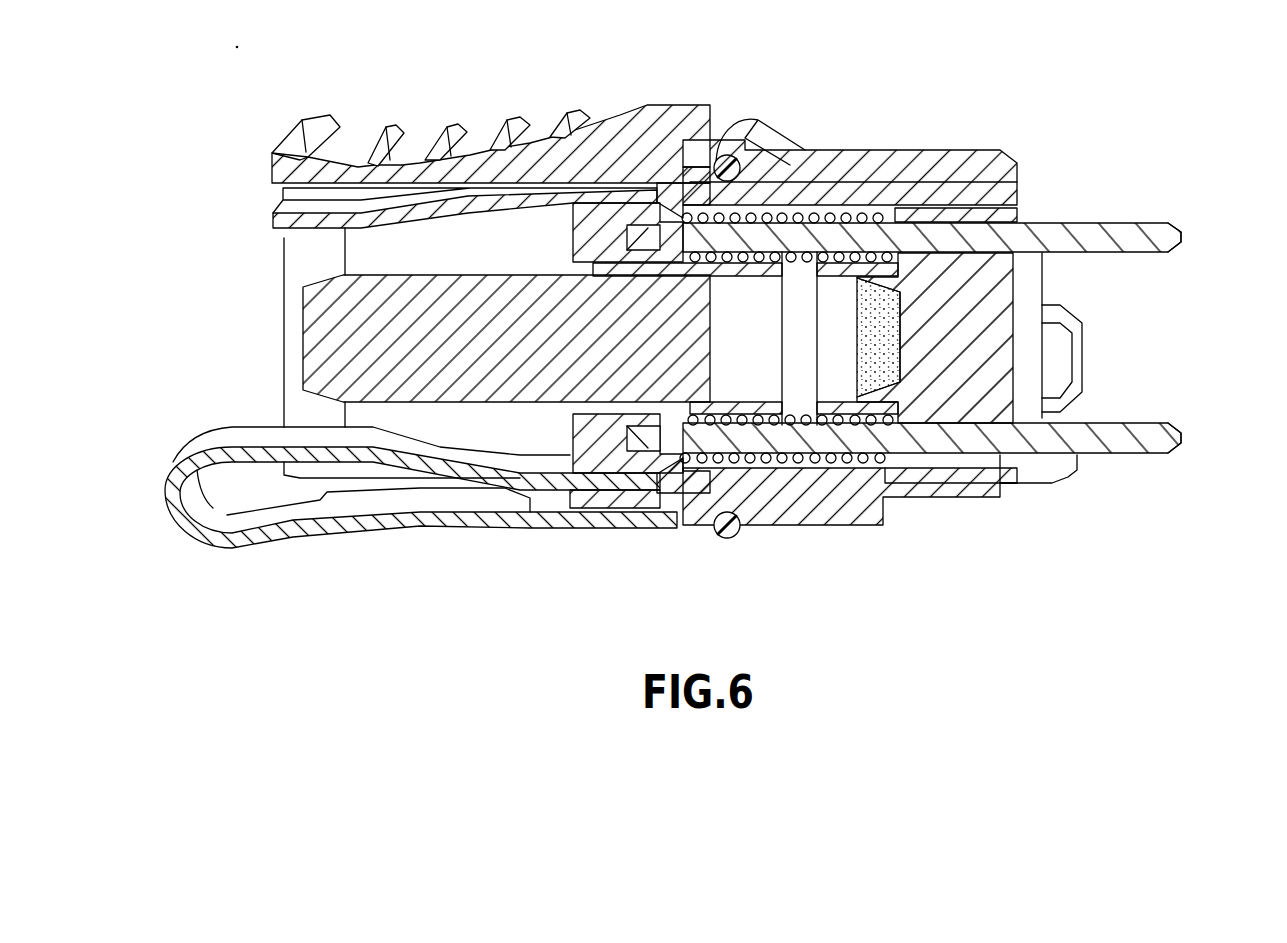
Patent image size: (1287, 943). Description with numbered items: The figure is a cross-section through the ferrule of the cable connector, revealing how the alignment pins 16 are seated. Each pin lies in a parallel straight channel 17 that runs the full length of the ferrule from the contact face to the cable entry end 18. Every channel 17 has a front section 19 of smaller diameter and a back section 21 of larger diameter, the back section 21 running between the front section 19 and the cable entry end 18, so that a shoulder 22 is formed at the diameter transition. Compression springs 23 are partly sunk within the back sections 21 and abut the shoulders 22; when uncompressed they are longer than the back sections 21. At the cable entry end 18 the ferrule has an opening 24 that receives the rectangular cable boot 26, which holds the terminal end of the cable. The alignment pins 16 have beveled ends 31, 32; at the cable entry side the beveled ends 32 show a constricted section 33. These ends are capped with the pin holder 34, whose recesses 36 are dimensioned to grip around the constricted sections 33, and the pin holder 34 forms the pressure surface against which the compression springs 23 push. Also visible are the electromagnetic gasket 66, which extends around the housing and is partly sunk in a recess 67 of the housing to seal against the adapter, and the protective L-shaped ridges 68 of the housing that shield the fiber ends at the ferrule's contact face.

The alignment pins 16 is at (1095, 232).
The channels 17 is at (934, 450).
The cable entry end 18 is at (687, 302).
The front section 19 is at (987, 210).
The back section 21 is at (818, 193).
The shoulder 22 is at (833, 497).
The compression springs 23 is at (853, 218).
The opening 24 is at (540, 257).
The cable boot 26 is at (503, 370).
The beveled end 31 is at (1183, 228).
The beveled end 32 is at (640, 233).
The constricted section 33 is at (658, 200).
The pin holder 34 is at (583, 243).
The recesses 36 is at (613, 487).
The electromagnetic gasket 66 is at (722, 537).
The recess 67 is at (753, 110).
The protective L-shaped ridges 68 is at (1060, 360).